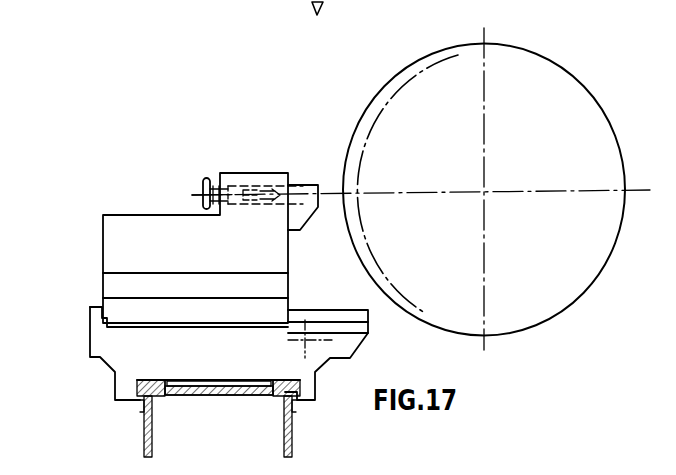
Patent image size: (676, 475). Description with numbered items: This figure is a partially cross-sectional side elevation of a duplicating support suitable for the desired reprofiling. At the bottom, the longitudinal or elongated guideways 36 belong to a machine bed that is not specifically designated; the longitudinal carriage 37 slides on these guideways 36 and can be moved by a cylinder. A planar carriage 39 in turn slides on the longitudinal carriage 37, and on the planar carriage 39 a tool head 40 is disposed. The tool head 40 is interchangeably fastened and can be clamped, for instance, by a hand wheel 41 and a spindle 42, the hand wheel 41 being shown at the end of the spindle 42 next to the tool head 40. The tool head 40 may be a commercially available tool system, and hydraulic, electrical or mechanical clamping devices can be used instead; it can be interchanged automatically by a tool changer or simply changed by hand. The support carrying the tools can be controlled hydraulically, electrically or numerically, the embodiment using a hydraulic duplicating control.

The longitudinal guideways 36 is at (160, 390).
The longitudinal carriage 37 is at (138, 352).
The planar carriage 39 is at (125, 247).
The tool head 40 is at (306, 193).
The hand wheel 41 is at (205, 178).
The spindle 42 is at (232, 190).